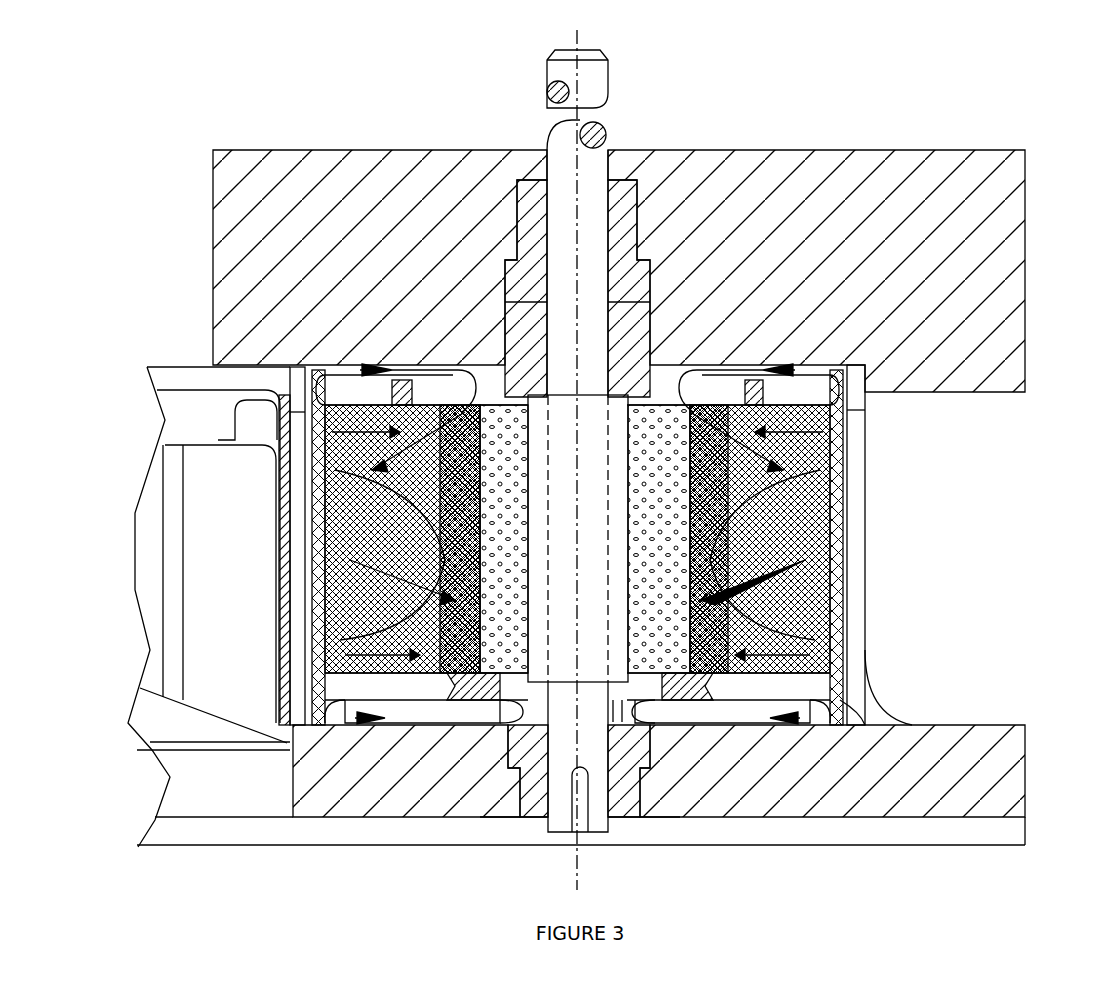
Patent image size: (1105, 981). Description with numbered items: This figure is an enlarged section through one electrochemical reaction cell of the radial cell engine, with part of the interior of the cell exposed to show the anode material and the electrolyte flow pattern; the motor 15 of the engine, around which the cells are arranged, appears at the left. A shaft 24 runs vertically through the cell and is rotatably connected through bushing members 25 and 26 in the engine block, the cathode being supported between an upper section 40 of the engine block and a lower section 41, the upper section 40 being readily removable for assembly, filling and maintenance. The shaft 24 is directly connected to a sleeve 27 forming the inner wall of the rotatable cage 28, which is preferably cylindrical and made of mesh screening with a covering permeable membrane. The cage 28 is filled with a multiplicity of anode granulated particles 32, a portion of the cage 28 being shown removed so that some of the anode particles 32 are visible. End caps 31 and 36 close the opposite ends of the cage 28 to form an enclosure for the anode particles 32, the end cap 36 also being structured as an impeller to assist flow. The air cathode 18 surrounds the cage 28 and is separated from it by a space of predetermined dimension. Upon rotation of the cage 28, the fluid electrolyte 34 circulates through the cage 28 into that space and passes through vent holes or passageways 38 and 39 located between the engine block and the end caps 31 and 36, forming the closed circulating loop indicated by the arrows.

The motor 15 is at (225, 508).
The air cathode 18 is at (313, 542).
The shaft 24 is at (562, 150).
The bushing member 25 is at (621, 195).
The bushing member 26 is at (530, 803).
The sleeve 27 is at (540, 415).
The rotatable cage 28 is at (315, 578).
The end cap 31 is at (403, 372).
The anode granulated particles 32 is at (845, 440).
The fluid electrolyte 34 is at (350, 368).
The end cap 36 is at (828, 725).
The vent hole or passageway 38 is at (483, 392).
The vent hole or passageway 39 is at (525, 690).
The upper section of the engine block 40 is at (990, 215).
The lower section of the engine block 41 is at (985, 785).